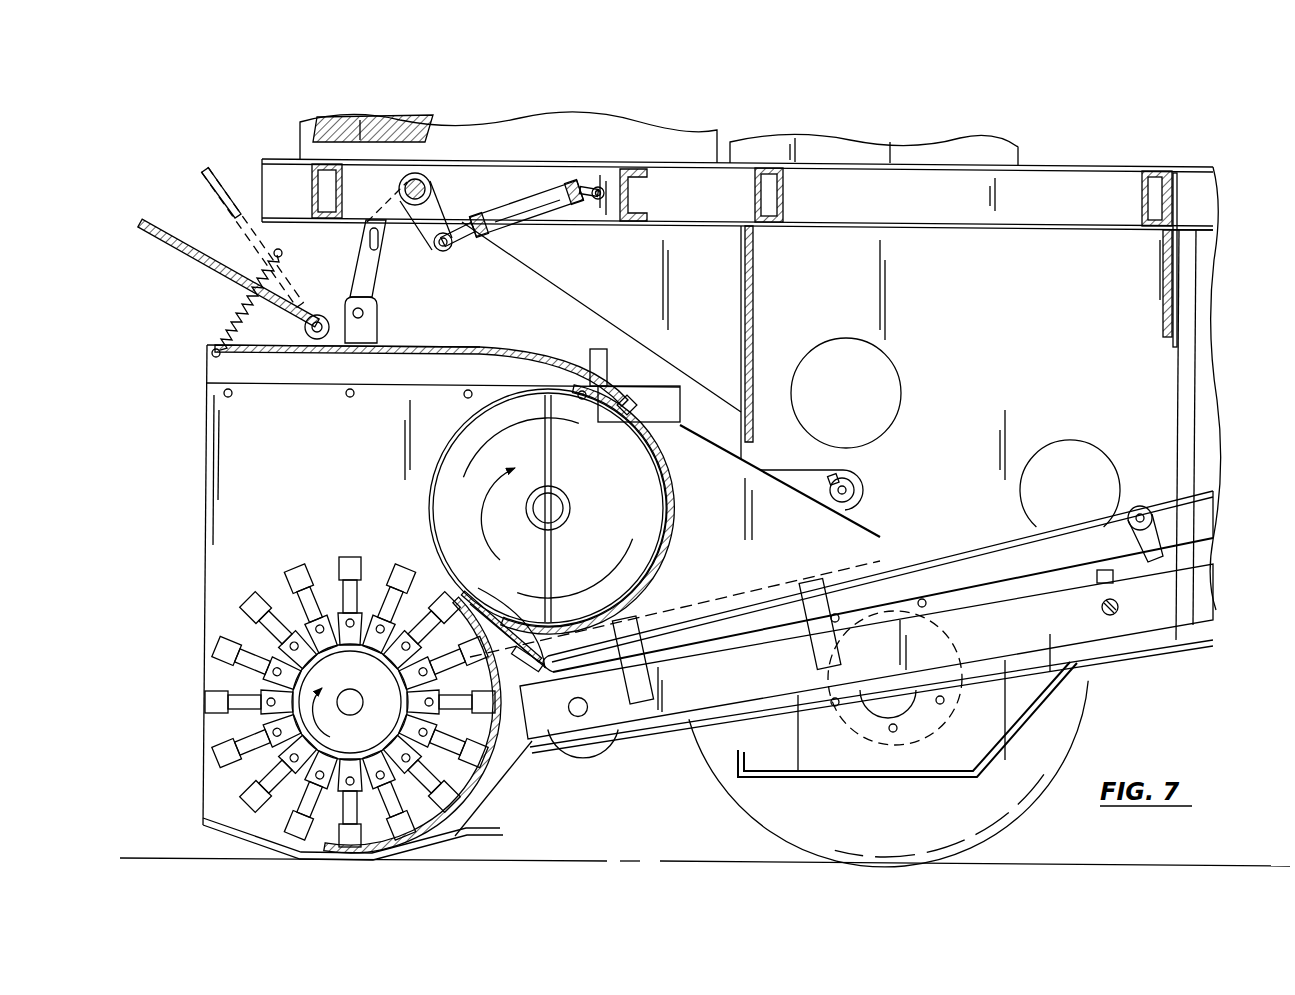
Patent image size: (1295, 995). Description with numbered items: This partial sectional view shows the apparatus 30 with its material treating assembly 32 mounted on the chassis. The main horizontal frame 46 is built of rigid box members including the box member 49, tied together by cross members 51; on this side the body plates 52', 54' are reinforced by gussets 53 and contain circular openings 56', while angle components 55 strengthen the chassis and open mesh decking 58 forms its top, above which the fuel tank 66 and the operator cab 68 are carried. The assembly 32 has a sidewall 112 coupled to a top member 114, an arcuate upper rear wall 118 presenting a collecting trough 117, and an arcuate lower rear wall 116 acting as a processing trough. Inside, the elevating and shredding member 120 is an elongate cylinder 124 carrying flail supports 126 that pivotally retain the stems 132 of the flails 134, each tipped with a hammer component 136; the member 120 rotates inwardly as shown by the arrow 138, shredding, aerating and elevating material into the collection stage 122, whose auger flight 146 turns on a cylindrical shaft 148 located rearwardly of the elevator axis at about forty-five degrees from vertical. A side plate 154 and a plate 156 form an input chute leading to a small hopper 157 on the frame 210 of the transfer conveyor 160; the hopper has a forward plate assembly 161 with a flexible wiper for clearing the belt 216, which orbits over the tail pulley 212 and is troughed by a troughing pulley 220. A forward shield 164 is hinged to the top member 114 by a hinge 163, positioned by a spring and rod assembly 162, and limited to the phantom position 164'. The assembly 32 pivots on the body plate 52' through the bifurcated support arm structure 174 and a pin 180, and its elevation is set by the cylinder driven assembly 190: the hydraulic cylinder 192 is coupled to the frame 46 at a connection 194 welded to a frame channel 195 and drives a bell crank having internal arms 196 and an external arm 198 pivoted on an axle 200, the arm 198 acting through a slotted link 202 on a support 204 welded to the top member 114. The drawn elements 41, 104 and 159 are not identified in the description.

The apparatus 30 is at (1180, 92).
The material treating assembly 32 is at (200, 388).
The wheel 41 is at (755, 810).
The main horizontal frame 46 is at (1262, 160).
The rigid box member 49 is at (1068, 182).
The cross members 51 is at (322, 220).
The body plate 52' is at (1020, 360).
The gussets 53 is at (756, 296).
The body plate 54' is at (690, 285).
The angle components 55 is at (1190, 326).
The openings 56' is at (955, 432).
The open mesh decking 58 is at (1163, 170).
The fuel tank 66 is at (838, 148).
The operator cab 68 is at (300, 128).
The wheel hub 104 is at (918, 722).
The sidewall 112 is at (206, 462).
The top member 114 is at (470, 346).
The lower rear wall 116 is at (480, 828).
The collection trough 117 is at (655, 572).
The upper rear wall 118 is at (627, 398).
The elevating and shredding member 120 is at (238, 578).
The collection stage 122 is at (472, 426).
The elongate cylinder 124 is at (325, 664).
The flail supports 126 is at (385, 575).
The stem 132 is at (315, 595).
The flails 134 is at (300, 568).
The hammer components 136 is at (400, 570).
The arrow 138 is at (260, 520).
The auger flight 146 is at (668, 497).
The cylindrical shaft 148 is at (562, 492).
The side plate 154 is at (878, 556).
The plate 156 is at (522, 615).
The hopper 157 is at (880, 525).
The conveyor flight 159 is at (648, 690).
The transfer conveyor 160 is at (692, 760).
The forward plate assembly 161 is at (522, 760).
The spring and rod assembly 162 is at (235, 312).
The hinge 163 is at (320, 315).
The forward shield 164 is at (212, 262).
The shield limit position 164' is at (216, 235).
The support arm structure 174 is at (838, 478).
The pin 180 is at (856, 486).
The hydraulic cylinder driven assembly 190 is at (530, 238).
The hydraulic cylinder 192 is at (495, 240).
The connection 194 is at (600, 200).
The frame channel 195 is at (640, 192).
The bell crank arms 196 is at (434, 250).
The bell crank arm 198 is at (405, 232).
The axle 200 is at (432, 189).
The link 202 is at (362, 254).
The support 204 is at (377, 325).
The conveyor frame 210 is at (1195, 628).
The tail pulley 212 is at (588, 757).
The belt 216 is at (1152, 652).
The troughing pulley 220 is at (1153, 518).